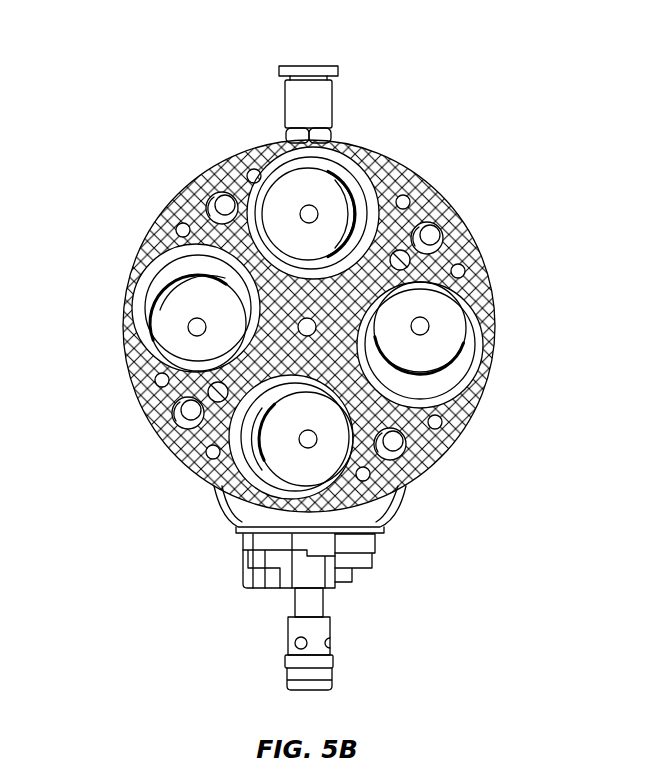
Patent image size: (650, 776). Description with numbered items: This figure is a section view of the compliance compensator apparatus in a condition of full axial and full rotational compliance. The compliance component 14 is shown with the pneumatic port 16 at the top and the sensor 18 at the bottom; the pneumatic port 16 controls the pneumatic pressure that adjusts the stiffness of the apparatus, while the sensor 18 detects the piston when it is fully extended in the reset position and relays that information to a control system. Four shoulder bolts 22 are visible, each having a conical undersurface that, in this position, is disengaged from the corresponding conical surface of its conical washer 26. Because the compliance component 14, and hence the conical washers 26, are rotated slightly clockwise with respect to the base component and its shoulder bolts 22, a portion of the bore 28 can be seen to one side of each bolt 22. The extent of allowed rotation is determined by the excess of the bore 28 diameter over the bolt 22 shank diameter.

The compliance component 14 is at (522, 263).
The pneumatic port 16 is at (332, 108).
The sensor 18 is at (330, 628).
The shoulder bolt 22 is at (337, 197).
The conical washer 26 is at (175, 273).
The bore 28 is at (362, 217).